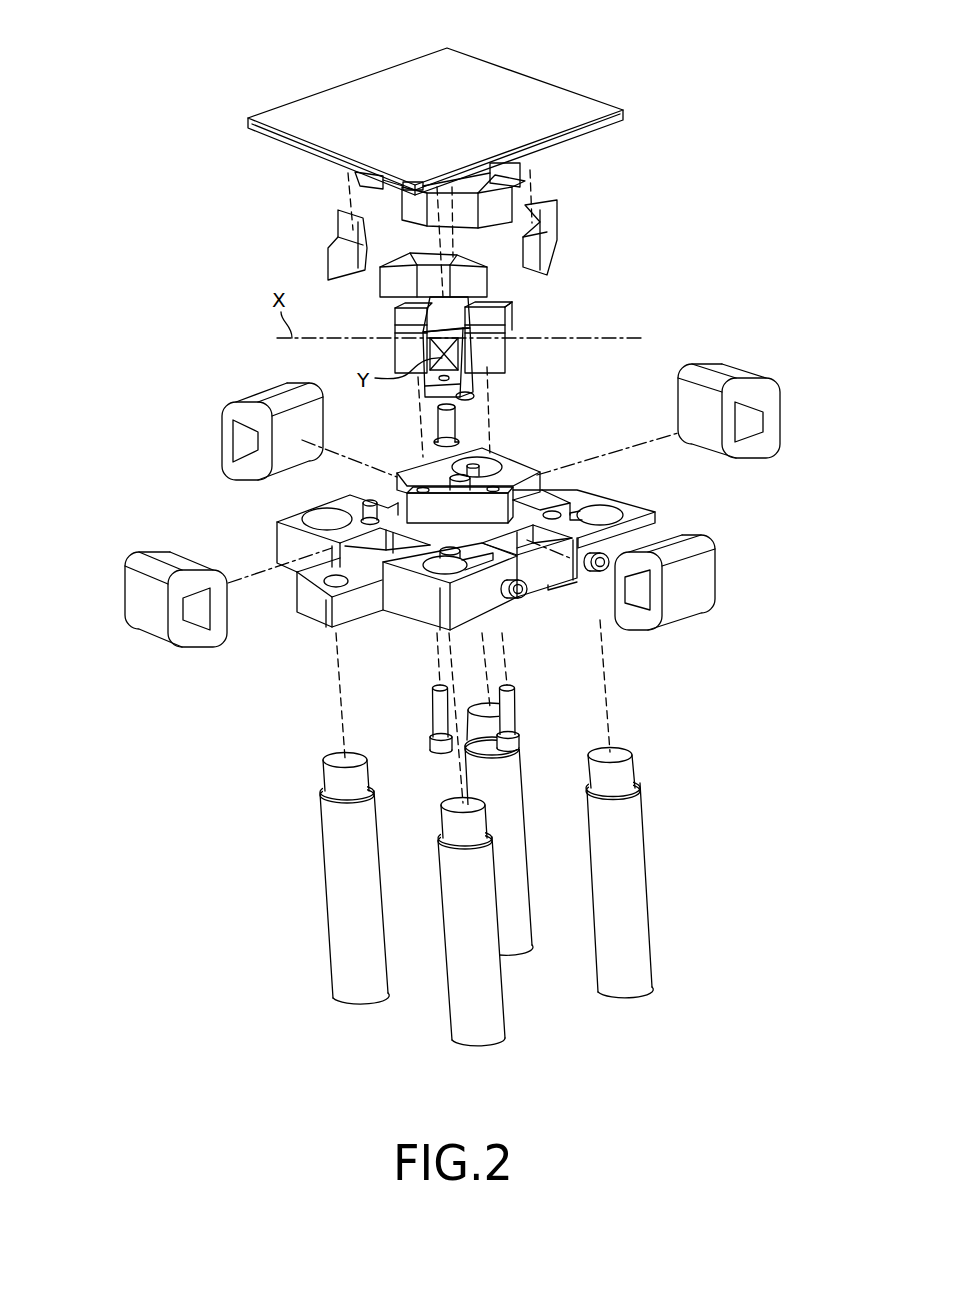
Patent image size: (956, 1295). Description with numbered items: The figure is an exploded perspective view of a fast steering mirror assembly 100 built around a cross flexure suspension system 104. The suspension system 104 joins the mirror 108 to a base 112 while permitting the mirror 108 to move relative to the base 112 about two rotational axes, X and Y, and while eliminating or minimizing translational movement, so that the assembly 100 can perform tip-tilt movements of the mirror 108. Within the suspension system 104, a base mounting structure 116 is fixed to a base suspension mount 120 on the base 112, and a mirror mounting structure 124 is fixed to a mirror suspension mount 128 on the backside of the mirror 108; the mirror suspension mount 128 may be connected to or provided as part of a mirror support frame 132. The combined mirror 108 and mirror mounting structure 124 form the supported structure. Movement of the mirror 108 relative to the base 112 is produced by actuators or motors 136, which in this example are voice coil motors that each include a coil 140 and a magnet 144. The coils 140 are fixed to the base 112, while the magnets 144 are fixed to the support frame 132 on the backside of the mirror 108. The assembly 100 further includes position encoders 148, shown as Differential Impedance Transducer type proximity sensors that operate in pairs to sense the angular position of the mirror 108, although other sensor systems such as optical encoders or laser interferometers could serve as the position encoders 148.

The fast steering mirror assembly 100 is at (155, 142).
The cross flexure suspension system 104 is at (524, 345).
The mirror 108 is at (518, 78).
The base 112 is at (647, 508).
The base mounting structure 116 is at (495, 362).
The base suspension mount 120 is at (505, 490).
The mirror mounting structure 124 is at (437, 390).
The mirror suspension mount 128 is at (430, 193).
The support frame 132 is at (543, 162).
The actuators or motors 136 is at (469, 544).
The coil 140 is at (702, 587).
The magnet 144 is at (560, 222).
The position encoders 148 is at (646, 866).